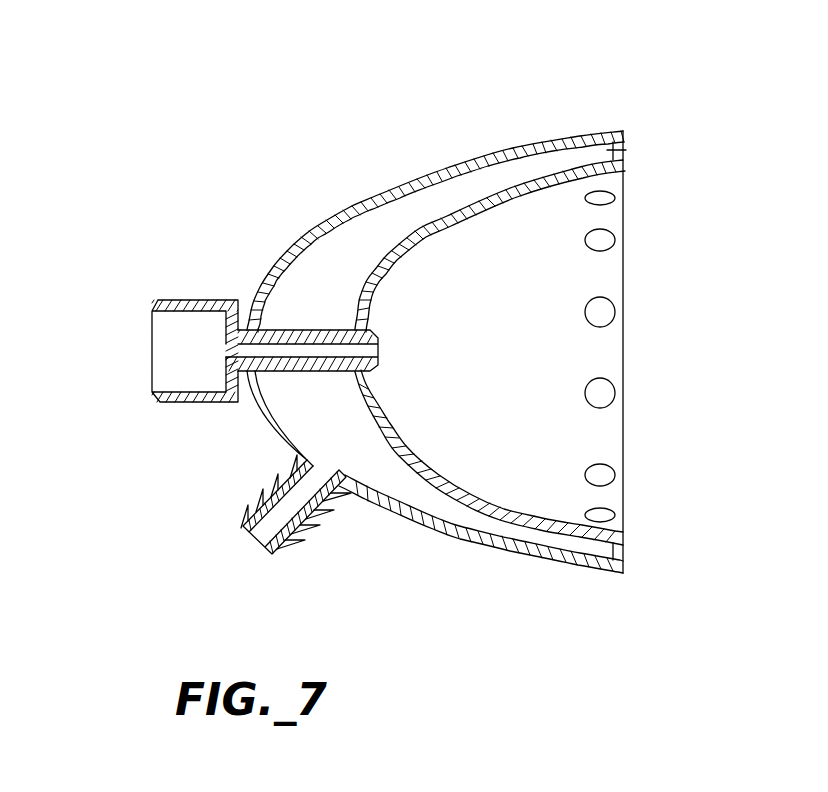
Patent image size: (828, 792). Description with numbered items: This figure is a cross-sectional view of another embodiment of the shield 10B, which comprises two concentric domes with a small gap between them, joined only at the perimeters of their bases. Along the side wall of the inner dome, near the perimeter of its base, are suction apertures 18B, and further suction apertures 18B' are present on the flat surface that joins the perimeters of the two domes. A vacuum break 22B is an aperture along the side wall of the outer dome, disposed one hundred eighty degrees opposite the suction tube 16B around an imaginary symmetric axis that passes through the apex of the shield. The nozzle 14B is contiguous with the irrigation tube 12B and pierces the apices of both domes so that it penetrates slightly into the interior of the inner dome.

The shield 10B is at (500, 150).
The vacuum break 22B is at (400, 188).
The suction apertures 18B' is at (664, 163).
The suction apertures 18B is at (650, 356).
The irrigation tube 12B is at (180, 402).
The nozzle 14B is at (372, 352).
The suction tube 16B is at (290, 554).